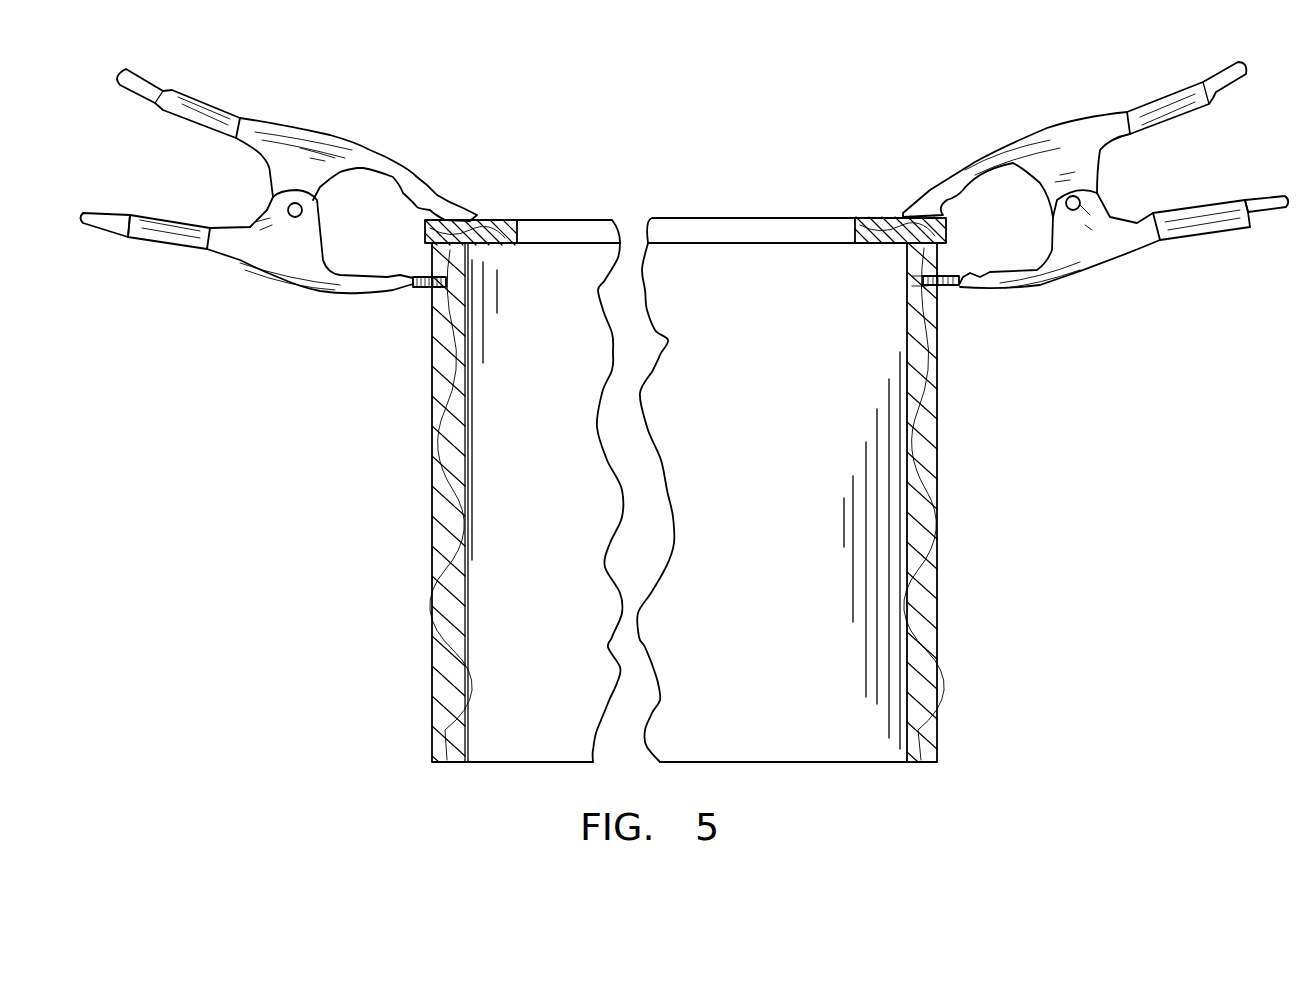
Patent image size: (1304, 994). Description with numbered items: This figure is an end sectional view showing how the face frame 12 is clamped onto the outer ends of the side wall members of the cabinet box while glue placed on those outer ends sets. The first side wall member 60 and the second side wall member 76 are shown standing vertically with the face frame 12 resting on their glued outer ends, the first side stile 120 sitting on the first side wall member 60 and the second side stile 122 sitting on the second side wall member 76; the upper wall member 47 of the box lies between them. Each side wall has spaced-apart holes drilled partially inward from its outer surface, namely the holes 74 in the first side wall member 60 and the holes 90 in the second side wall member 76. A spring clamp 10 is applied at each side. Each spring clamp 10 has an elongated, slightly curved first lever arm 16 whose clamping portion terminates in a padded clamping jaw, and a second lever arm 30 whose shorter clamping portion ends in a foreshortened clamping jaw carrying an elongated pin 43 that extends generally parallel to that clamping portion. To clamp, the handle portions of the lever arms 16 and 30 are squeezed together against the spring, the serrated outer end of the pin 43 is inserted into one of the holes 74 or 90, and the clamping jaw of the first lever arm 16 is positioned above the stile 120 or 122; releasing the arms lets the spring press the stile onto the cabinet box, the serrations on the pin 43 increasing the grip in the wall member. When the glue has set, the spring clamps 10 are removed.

The spring clamp 10 is at (685, 217).
The face frame 12 is at (804, 195).
The first lever arm 16 is at (380, 148).
The second lever arm 30 is at (318, 294).
The pin 43 is at (421, 292).
The upper wall member 47 is at (868, 596).
The first side wall member 60 is at (428, 523).
The holes 74 is at (443, 288).
The second side wall member 76 is at (947, 520).
The holes 90 is at (925, 288).
The first side stile 120 is at (492, 219).
The second side stile 122 is at (876, 215).